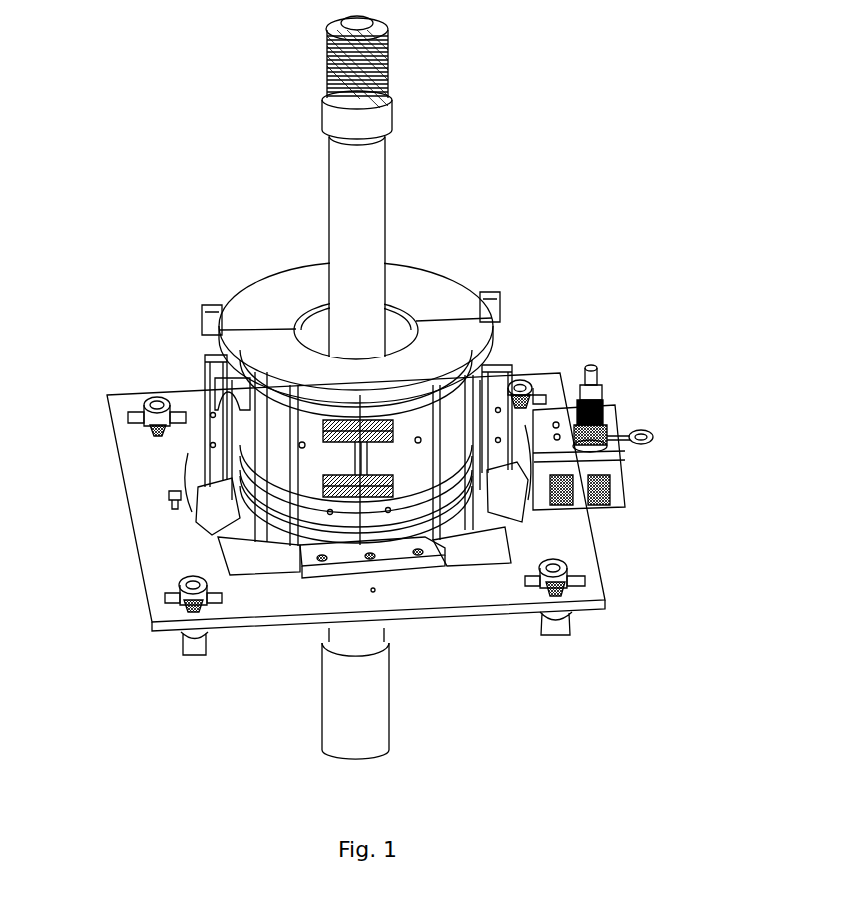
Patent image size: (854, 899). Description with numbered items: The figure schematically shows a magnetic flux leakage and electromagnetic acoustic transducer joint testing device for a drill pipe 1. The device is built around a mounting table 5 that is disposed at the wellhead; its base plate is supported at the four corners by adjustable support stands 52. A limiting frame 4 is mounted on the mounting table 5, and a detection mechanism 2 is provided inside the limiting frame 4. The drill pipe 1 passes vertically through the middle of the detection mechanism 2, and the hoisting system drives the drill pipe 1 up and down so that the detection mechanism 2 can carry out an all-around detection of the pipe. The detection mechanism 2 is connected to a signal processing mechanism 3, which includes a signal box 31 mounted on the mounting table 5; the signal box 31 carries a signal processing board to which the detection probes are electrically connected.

The drill pipe 1 is at (350, 220).
The detection mechanism 2 is at (393, 330).
The signal processing mechanism 3 is at (622, 401).
The signal box 31 is at (605, 463).
The limiting frame 4 is at (275, 303).
The mounting table 5 is at (158, 460).
The adjustable support stand 52 is at (188, 634).